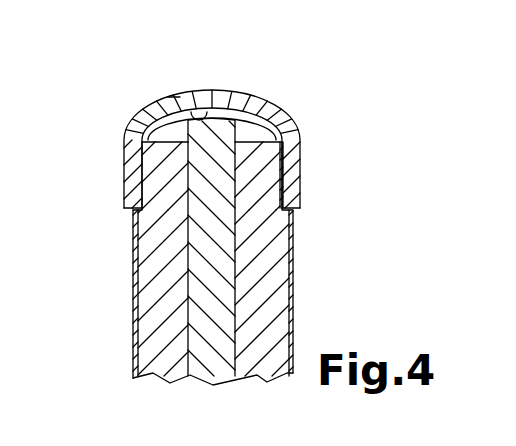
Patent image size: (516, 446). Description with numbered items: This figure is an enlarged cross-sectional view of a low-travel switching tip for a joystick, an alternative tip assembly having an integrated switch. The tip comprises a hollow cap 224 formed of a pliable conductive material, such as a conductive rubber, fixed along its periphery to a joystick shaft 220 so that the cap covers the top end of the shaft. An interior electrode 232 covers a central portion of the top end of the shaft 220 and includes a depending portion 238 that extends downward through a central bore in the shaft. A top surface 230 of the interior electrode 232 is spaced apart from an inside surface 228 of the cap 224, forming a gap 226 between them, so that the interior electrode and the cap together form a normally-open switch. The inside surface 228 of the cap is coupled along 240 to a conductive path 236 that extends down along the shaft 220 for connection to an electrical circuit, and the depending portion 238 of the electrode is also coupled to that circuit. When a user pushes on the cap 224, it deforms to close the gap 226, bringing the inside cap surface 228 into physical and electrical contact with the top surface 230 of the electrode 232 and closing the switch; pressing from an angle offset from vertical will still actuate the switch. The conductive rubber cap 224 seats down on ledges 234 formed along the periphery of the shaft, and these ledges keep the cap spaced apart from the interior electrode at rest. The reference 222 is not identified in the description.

The joystick shaft 220 is at (293, 298).
The cap 222 is at (300, 148).
The hollow cap 224 is at (256, 95).
The gap 226 is at (257, 118).
The inside surface 228 is at (199, 106).
The top surface 230 is at (168, 97).
The interior electrode 232 is at (182, 134).
The ledges 234 is at (300, 203).
The conductive path 236 is at (133, 288).
The depending portion 238 is at (207, 376).
The coupling 240 is at (140, 172).